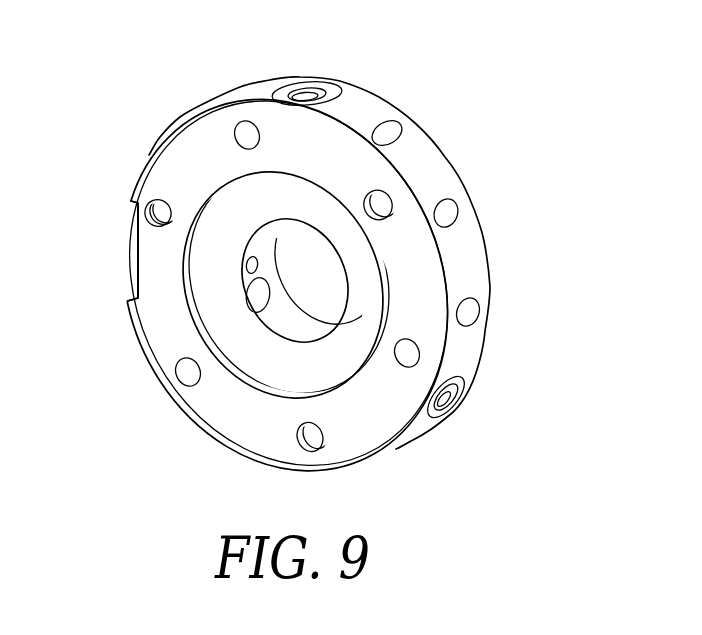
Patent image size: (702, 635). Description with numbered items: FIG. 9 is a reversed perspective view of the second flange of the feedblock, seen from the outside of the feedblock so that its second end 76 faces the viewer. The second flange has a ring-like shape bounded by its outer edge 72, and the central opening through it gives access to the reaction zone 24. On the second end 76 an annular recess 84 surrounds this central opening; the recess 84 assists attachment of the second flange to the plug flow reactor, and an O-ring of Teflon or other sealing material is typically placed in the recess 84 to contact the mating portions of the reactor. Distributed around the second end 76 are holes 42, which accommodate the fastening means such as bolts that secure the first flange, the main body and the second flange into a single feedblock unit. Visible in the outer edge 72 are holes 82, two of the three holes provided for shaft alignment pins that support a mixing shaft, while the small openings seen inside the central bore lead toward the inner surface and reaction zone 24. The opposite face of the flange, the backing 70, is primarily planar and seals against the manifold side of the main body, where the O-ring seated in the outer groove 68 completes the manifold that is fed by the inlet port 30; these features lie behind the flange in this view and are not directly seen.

The reaction zone 24 is at (324, 278).
The inlet port 30 is at (357, 437).
The holes 42 is at (148, 221).
The outer groove 68 is at (247, 267).
The backing 70 is at (253, 297).
The outer edge 72 is at (367, 108).
The second end 76 is at (218, 415).
The holes 82 is at (305, 92).
The recess 84 is at (363, 285).